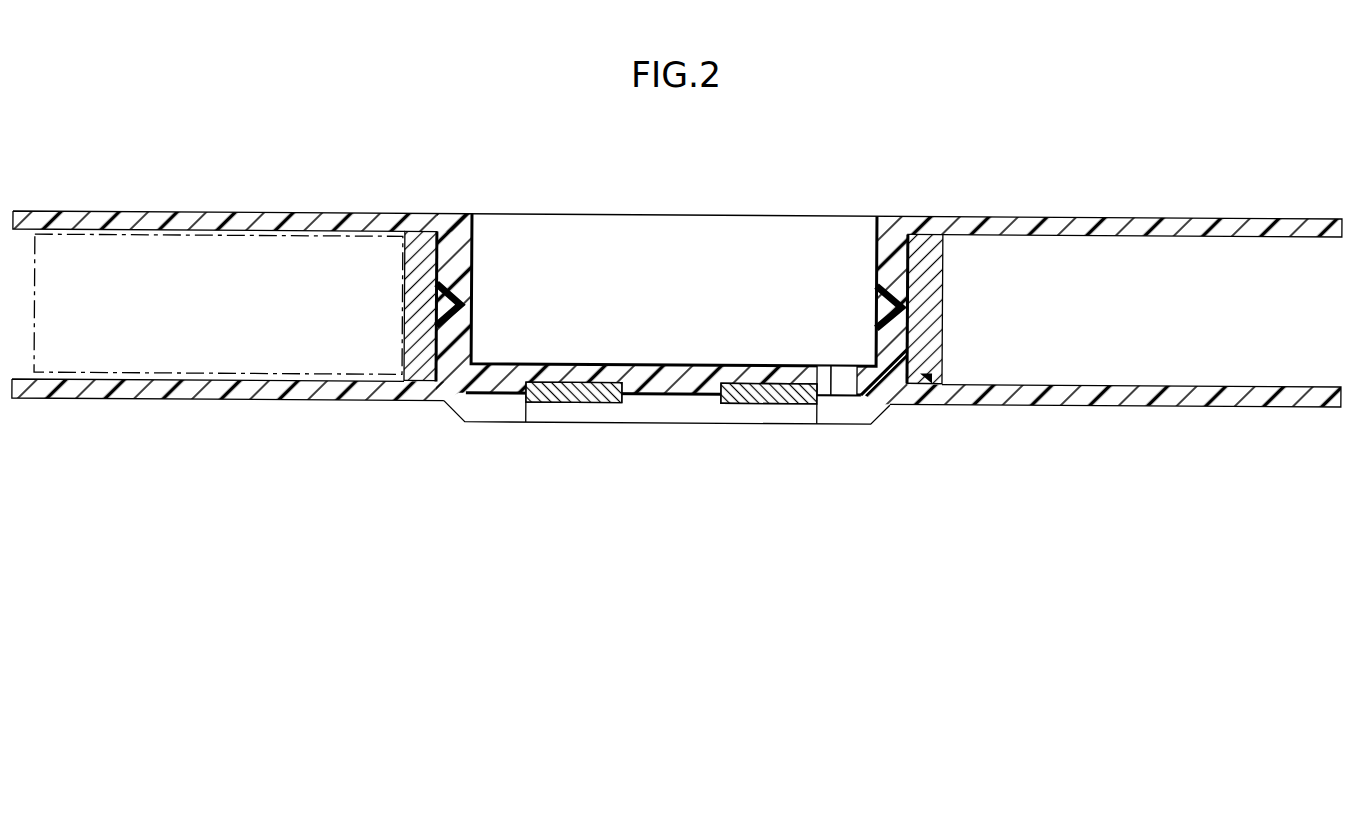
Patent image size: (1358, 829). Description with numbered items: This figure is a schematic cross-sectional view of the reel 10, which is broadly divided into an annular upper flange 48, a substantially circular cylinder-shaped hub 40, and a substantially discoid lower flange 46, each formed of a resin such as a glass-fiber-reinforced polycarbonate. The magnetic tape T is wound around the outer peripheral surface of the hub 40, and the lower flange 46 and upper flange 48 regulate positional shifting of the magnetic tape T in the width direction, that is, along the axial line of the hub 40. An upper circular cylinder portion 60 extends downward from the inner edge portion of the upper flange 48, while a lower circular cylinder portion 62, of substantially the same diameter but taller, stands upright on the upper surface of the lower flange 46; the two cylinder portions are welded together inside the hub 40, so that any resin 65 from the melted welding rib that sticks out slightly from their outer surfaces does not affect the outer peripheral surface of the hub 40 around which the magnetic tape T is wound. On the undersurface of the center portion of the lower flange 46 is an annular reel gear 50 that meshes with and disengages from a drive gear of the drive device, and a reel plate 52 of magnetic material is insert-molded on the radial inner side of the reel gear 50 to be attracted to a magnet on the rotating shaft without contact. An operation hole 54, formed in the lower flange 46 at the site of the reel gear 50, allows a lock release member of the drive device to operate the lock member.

The reel 10 is at (1181, 141).
The hub 40 is at (934, 308).
The lower flange 46 is at (1055, 388).
The upper flange 48 is at (1058, 218).
The reel gear 50 is at (845, 406).
The reel plate 52 is at (753, 391).
The operation hole 54 is at (850, 375).
The upper circular cylinder portion 60 is at (932, 276).
The lower circular cylinder portion 62 is at (910, 342).
The resin 65 is at (890, 300).
The magnetic tape T is at (231, 358).